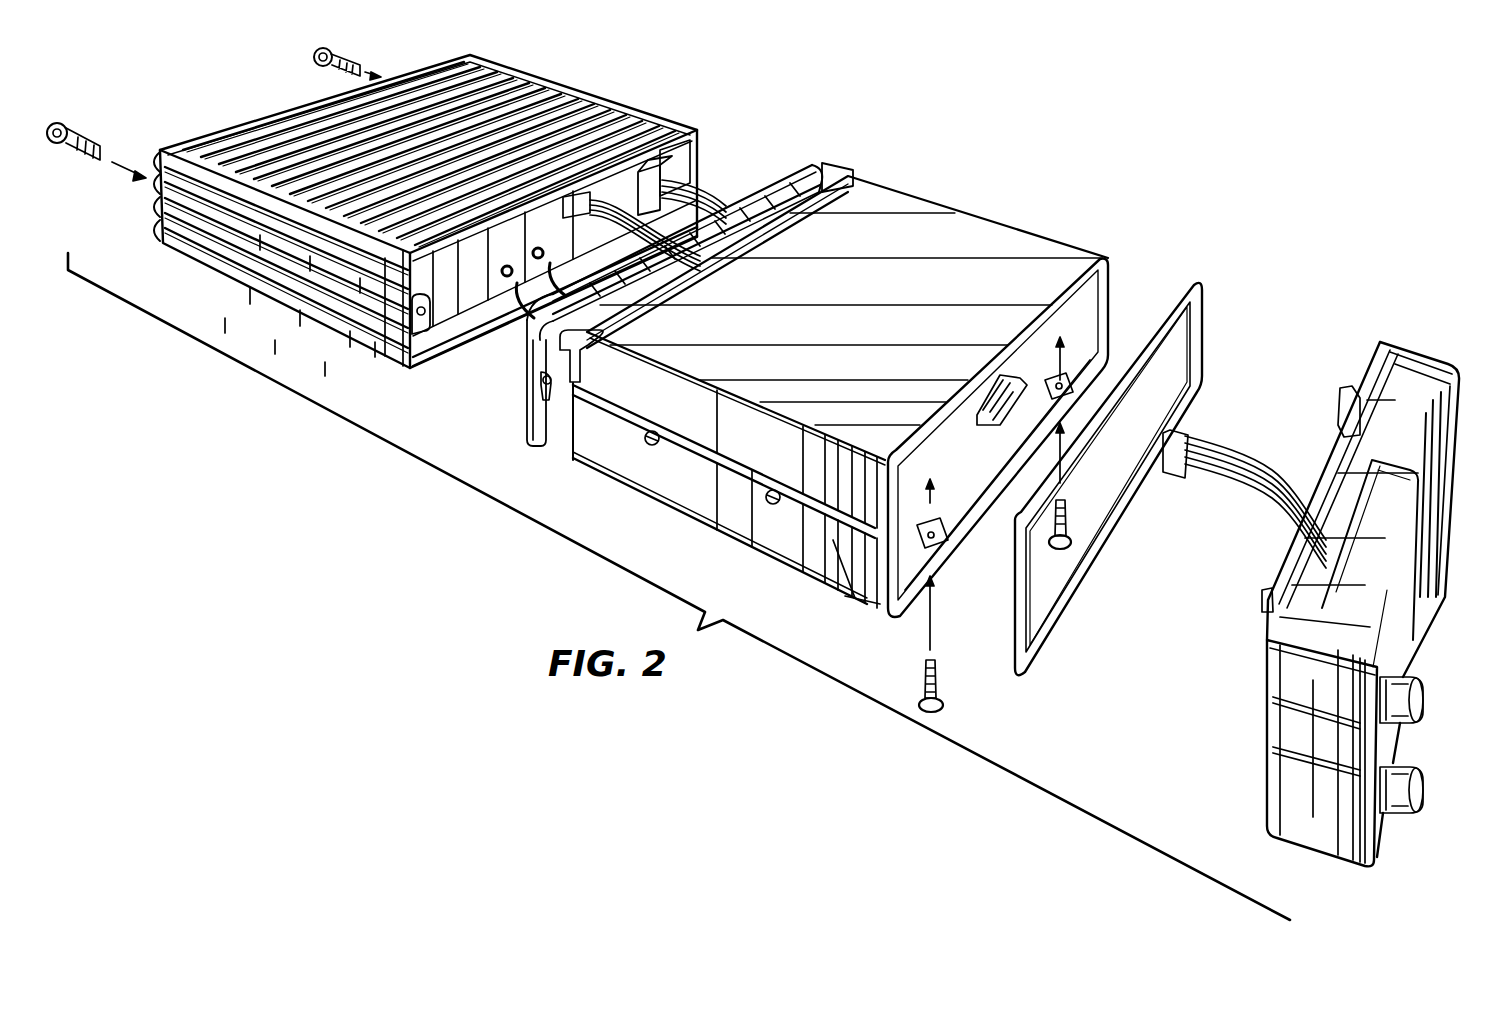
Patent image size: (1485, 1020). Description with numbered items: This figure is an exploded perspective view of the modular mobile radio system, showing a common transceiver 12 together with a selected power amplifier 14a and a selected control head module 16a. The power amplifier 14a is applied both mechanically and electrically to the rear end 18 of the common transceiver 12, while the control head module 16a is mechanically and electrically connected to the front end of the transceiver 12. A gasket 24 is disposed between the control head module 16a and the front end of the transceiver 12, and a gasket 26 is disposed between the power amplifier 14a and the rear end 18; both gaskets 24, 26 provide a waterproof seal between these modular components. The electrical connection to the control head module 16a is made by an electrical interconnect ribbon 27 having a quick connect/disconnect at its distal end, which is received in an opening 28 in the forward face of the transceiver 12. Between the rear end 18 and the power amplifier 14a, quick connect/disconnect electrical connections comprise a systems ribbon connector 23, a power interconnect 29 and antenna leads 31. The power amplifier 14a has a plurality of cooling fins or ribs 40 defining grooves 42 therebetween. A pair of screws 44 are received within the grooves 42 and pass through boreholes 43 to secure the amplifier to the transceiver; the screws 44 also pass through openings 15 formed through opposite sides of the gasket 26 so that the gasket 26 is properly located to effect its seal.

The transceiver module 12 is at (917, 197).
The power amplifier 14a is at (595, 94).
The openings 15 is at (543, 433).
The control head module 16a is at (1417, 350).
The rear end 18 is at (836, 168).
The systems ribbon connector 23 is at (631, 187).
The gasket 24 is at (1199, 278).
The gasket 26 is at (814, 165).
The electrical interconnect ribbon 27 is at (1200, 490).
The opening 28 is at (1005, 410).
The power interconnect 29 is at (709, 205).
The antenna leads 31 is at (510, 320).
The cooling fins 40 is at (167, 222).
The grooves 42 is at (197, 242).
The boreholes 43 is at (428, 345).
The screws 44 is at (78, 127).